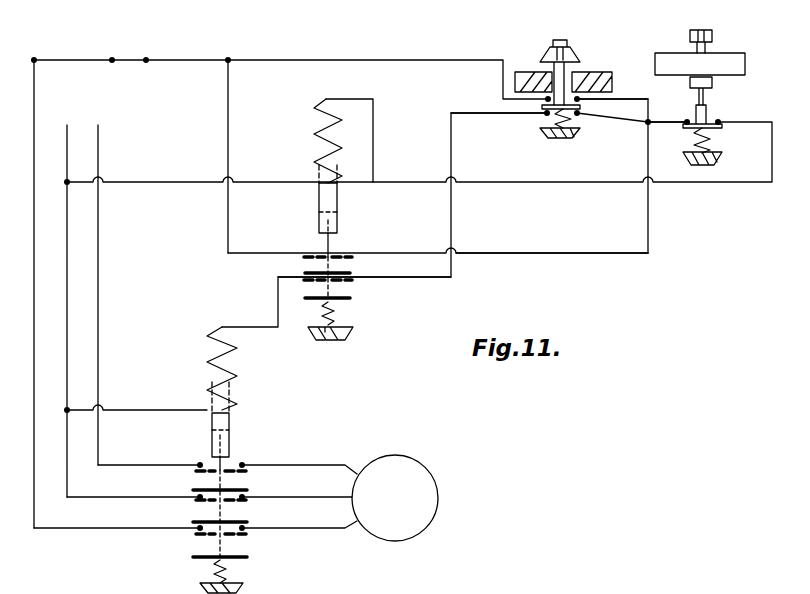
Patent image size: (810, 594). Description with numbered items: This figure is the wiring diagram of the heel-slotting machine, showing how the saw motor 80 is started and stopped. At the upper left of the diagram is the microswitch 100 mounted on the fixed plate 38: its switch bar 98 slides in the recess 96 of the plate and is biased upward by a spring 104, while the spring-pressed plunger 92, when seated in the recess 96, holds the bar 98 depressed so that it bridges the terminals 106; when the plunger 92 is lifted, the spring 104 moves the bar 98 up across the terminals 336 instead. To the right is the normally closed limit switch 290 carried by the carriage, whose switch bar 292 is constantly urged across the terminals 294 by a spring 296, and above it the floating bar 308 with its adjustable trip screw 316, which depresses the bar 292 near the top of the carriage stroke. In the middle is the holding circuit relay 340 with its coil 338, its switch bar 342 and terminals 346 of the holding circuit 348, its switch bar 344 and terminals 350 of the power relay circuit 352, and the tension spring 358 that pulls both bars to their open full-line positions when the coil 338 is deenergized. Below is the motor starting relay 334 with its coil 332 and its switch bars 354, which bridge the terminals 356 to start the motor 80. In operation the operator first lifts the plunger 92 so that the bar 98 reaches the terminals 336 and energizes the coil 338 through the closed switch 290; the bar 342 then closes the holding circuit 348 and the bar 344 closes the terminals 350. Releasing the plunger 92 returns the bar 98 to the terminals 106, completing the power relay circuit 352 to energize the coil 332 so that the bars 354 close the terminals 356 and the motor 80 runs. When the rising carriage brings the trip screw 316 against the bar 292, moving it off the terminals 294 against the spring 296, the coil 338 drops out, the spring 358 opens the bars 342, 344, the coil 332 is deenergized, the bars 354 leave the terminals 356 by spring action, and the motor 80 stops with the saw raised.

The fixed plate 38 is at (598, 88).
The plunger 92 is at (580, 25).
The recess 96 is at (592, 78).
The switch bar 98 is at (540, 80).
The microswitch 100 is at (588, 119).
The spring 104 is at (548, 118).
The terminals 106 is at (545, 112).
The terminals 336 is at (600, 101).
The floating bar 308 is at (720, 62).
The trip screw 316 is at (712, 88).
The switch bar 292 is at (708, 108).
The terminals 294 is at (681, 117).
The spring 296 is at (712, 140).
The limit switch 290 is at (684, 152).
The coil 338 is at (320, 112).
The holding circuit relay 340 is at (279, 167).
The terminals 346 is at (311, 247).
The switch bar 342 is at (308, 273).
The terminals 350 is at (346, 281).
The switch bar 344 is at (348, 298).
The tension spring 358 is at (340, 316).
The power relay circuit 352 is at (440, 278).
The holding circuit 348 is at (617, 254).
The coil 332 is at (205, 347).
The motor starting relay 334 is at (273, 426).
The switch bars 354 is at (191, 548).
The terminals 356 is at (246, 529).
The motor 80 is at (423, 482).